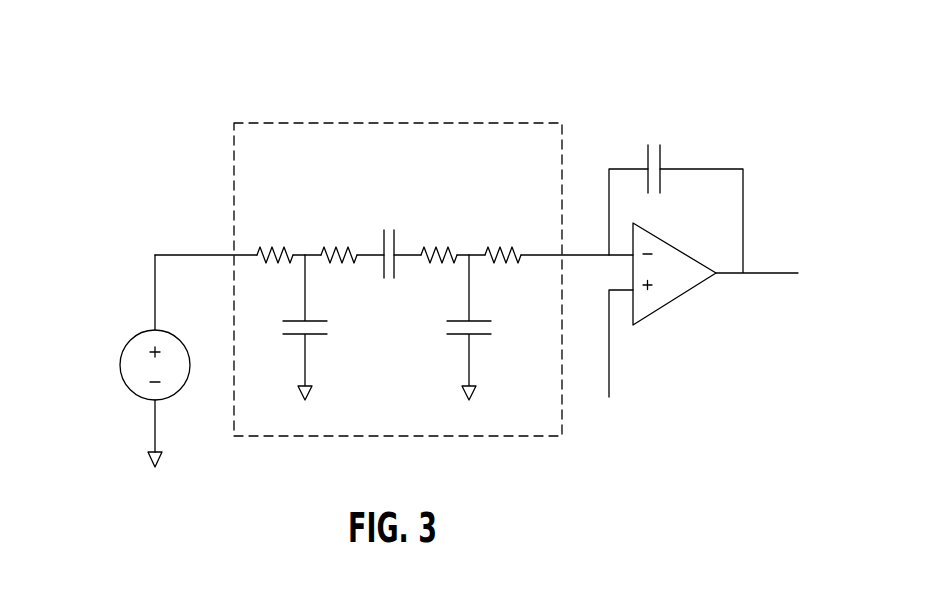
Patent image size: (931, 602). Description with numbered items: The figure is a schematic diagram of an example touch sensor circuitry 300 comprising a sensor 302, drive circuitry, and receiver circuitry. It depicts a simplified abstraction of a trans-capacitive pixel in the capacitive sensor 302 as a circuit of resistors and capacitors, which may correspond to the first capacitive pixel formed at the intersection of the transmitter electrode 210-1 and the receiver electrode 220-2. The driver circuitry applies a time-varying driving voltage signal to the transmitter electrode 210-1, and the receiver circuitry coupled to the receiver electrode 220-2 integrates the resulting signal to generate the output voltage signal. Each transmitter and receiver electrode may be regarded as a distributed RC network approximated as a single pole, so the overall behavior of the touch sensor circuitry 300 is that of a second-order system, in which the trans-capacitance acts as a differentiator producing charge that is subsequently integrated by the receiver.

The touch sensor circuitry 300 is at (193, 93).
The sensor 302 is at (389, 279).
The transmitter electrode 210-1 is at (352, 212).
The receiver electrode 220-2 is at (426, 211).